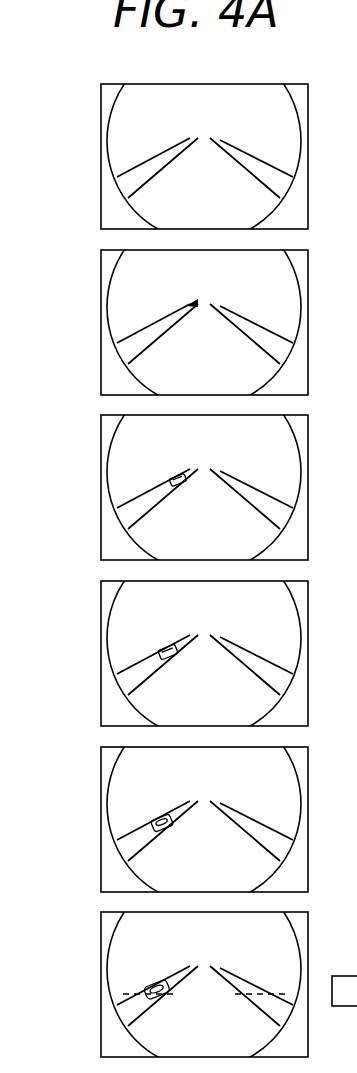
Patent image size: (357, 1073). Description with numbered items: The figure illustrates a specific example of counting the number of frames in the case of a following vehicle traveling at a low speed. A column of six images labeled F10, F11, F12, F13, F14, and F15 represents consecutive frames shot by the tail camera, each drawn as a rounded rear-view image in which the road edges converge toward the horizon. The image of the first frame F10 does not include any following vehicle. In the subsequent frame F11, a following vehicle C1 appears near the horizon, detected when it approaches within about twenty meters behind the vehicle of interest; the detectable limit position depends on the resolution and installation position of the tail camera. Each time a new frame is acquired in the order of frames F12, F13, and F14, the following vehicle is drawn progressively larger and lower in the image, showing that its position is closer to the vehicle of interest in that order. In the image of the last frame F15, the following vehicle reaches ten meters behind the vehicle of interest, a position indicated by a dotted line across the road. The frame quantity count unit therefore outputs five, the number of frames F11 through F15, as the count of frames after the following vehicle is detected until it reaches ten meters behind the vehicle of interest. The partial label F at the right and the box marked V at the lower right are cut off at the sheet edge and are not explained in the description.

The frame F10 is at (174, 141).
The frame F11 is at (174, 307).
The frame F12 is at (174, 472).
The frame F13 is at (174, 638).
The frame F14 is at (174, 804).
The frame F15 is at (174, 969).
The following vehicle C1 is at (196, 299).
The vehicle speed indicator box V is at (344, 991).
The frame label F is at (350, 571).